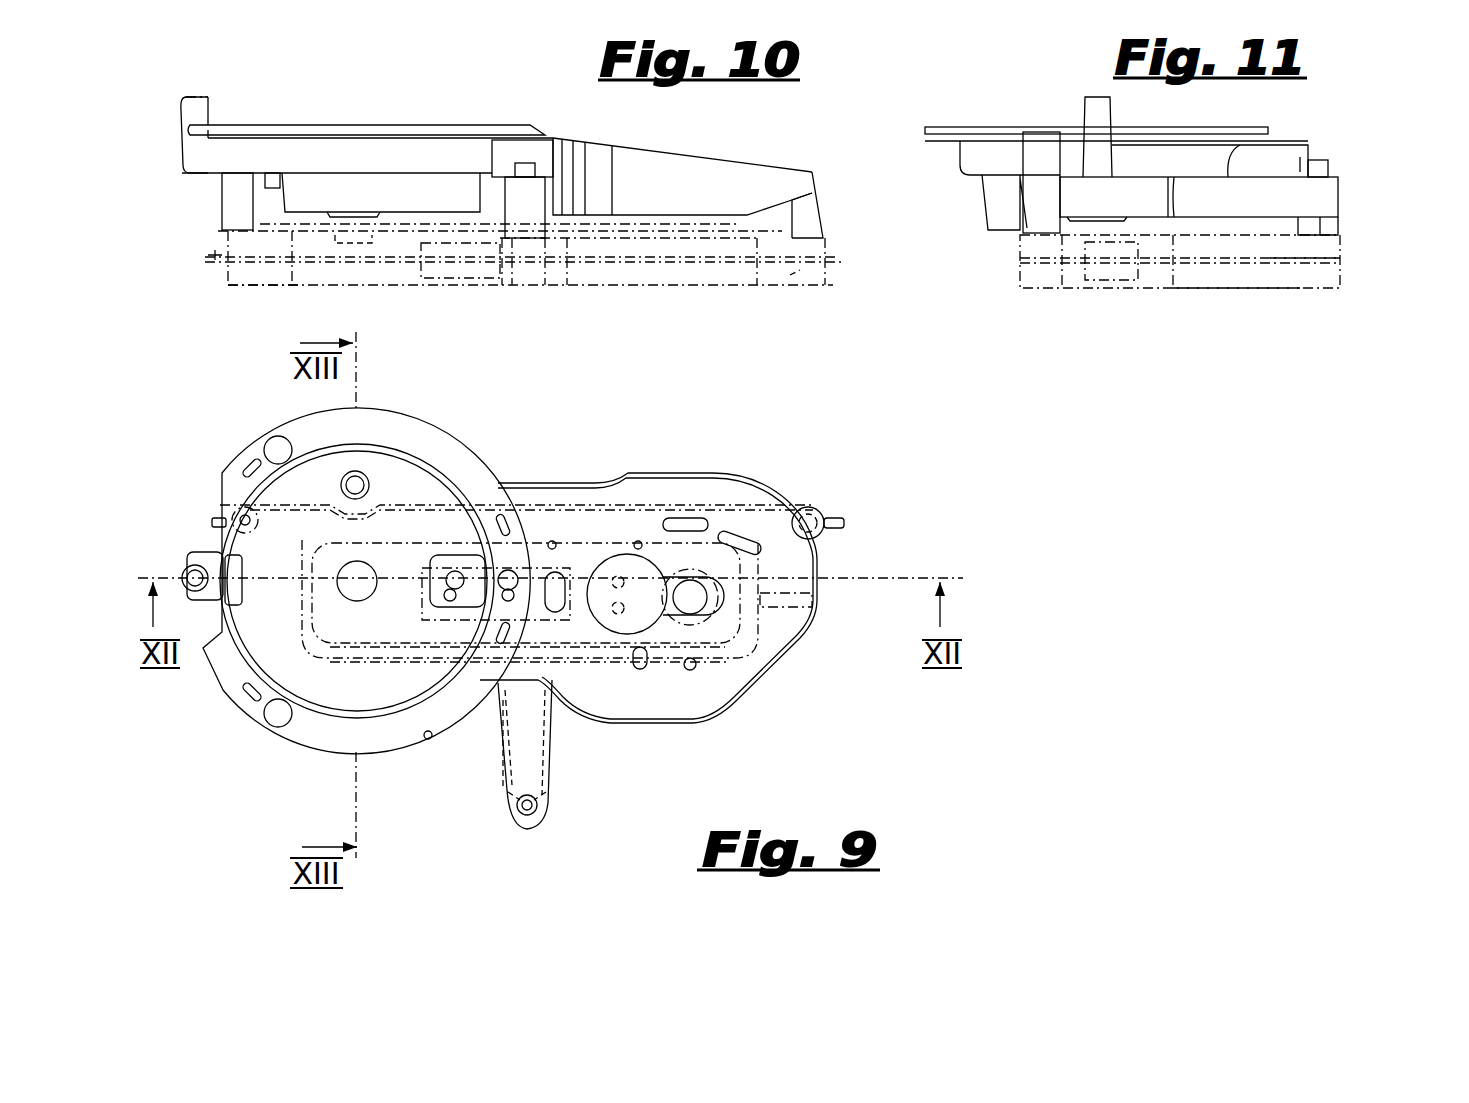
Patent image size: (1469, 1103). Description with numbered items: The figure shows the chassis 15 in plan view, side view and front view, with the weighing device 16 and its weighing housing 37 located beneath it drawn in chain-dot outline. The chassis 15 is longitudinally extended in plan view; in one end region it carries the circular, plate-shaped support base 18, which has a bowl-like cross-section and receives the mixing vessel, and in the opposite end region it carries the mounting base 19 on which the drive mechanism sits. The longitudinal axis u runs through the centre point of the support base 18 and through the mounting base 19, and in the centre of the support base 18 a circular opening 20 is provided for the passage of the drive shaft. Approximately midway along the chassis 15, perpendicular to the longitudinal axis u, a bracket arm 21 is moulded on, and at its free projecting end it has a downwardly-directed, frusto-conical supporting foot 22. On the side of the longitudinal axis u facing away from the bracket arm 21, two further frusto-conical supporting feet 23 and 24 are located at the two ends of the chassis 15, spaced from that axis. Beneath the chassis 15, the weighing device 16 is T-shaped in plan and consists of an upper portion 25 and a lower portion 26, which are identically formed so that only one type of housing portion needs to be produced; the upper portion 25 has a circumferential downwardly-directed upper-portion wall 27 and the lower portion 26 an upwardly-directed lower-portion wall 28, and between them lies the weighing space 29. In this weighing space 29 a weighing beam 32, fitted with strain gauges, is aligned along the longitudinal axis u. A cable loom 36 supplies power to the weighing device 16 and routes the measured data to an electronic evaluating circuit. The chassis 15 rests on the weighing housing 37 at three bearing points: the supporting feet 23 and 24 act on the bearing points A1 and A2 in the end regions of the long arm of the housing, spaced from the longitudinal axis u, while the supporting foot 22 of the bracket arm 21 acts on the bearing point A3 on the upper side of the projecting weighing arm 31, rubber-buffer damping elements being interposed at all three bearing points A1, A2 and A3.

In FIG. 10, the chassis 15 is at (342, 117).
In FIG. 11, the chassis 15 is at (1352, 160).
In FIG. 9, the chassis 15 is at (800, 712).
In FIG. 10, the weighing device 16 is at (703, 290).
In FIG. 11, the weighing device 16 is at (1183, 292).
In FIG. 9, the weighing device 16 is at (692, 507).
In FIG. 9, the support base 18 is at (397, 483).
In FIG. 9, the mounting base 19 is at (723, 560).
In FIG. 9, the circular opening 20 is at (360, 572).
In FIG. 10, the bracket arm 21 is at (540, 153).
In FIG. 11, the bracket arm 21 is at (1272, 158).
In FIG. 9, the bracket arm 21 is at (535, 753).
In FIG. 10, the supporting foot 22 is at (532, 193).
In FIG. 11, the supporting foot 22 is at (1320, 224).
In FIG. 9, the supporting foot 22 is at (547, 808).
In FIG. 10, the supporting foot 23 is at (817, 220).
In FIG. 9, the supporting foot 23 is at (822, 515).
In FIG. 10, the supporting foot 24 is at (225, 210).
In FIG. 11, the supporting foot 24 is at (1035, 215).
In FIG. 9, the supporting foot 24 is at (215, 522).
In FIG. 10, the upper portion 25 is at (222, 255).
In FIG. 10, the lower portion 26 is at (270, 267).
In FIG. 10, the upper-portion wall 27 is at (615, 247).
In FIG. 11, the upper-portion wall 27 is at (1303, 262).
In FIG. 9, the upper-portion wall 27 is at (628, 503).
In FIG. 10, the lower-portion wall 28 is at (367, 273).
In FIG. 11, the lower-portion wall 28 is at (1237, 284).
In FIG. 9, the weighing space 29 is at (660, 497).
In FIG. 10, the weighing arm 31 is at (503, 285).
In FIG. 9, the weighing arm 31 is at (502, 773).
In FIG. 10, the weighing beam 32 is at (447, 277).
In FIG. 11, the weighing beam 32 is at (1112, 272).
In FIG. 9, the weighing beam 32 is at (548, 550).
In FIG. 9, the cable loom 36 is at (790, 620).
In FIG. 10, the weighing housing 37 is at (790, 275).
In FIG. 9, the weighing housing 37 is at (290, 632).
In FIG. 10, the bearing point A1 is at (229, 233).
In FIG. 11, the bearing point A1 is at (1048, 237).
In FIG. 9, the bearing point A1 is at (243, 507).
In FIG. 10, the bearing point A2 is at (815, 240).
In FIG. 9, the bearing point A2 is at (813, 525).
In FIG. 10, the bearing point A3 is at (510, 238).
In FIG. 11, the bearing point A3 is at (1343, 237).
In FIG. 9, the bearing point A3 is at (508, 813).
In FIG. 9, the longitudinal axis u is at (207, 555).